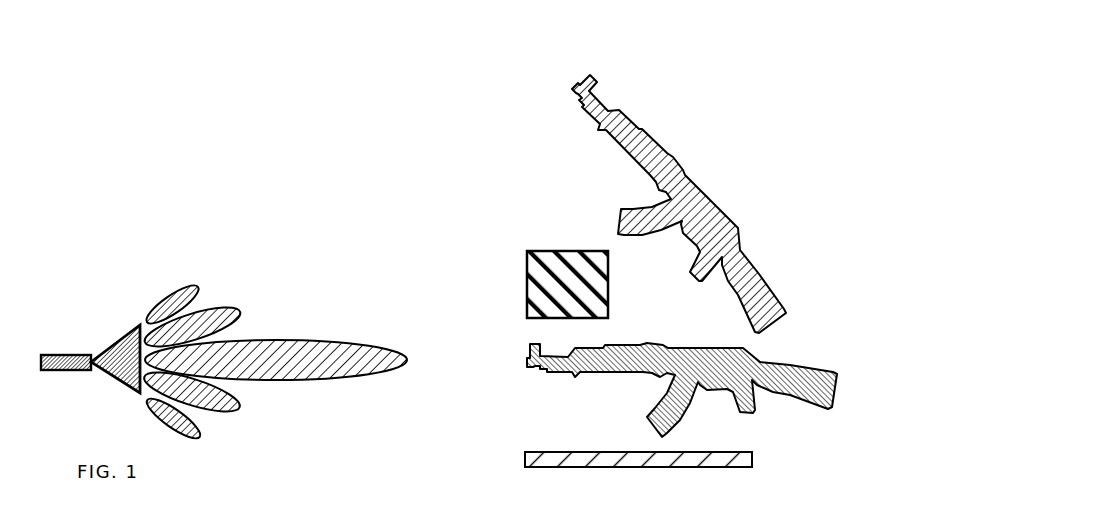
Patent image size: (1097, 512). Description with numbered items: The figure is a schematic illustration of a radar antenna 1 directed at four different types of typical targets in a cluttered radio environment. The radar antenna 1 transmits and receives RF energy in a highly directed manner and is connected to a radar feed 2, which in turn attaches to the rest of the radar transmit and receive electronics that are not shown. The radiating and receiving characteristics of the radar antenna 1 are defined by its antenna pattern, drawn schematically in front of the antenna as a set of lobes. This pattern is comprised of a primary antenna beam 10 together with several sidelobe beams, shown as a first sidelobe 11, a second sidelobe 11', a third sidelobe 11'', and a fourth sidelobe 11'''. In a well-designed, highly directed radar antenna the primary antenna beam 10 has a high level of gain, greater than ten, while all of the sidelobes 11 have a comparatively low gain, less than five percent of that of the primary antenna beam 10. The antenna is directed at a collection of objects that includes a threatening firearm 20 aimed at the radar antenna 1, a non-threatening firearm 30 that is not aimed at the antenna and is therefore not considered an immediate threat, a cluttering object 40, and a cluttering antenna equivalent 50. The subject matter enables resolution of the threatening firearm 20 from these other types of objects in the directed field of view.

The radar antenna 1 is at (122, 342).
The radar feed 2 is at (70, 357).
The primary antenna beam 10 is at (288, 342).
The first sidelobe 11 is at (195, 314).
The second sidelobe 11' is at (182, 288).
The third sidelobe 11'' is at (203, 405).
The fourth sidelobe 11''' is at (189, 429).
The threatening firearm 20 is at (533, 355).
The non-threatening firearm 30 is at (590, 110).
The cluttering object 40 is at (527, 278).
The cluttering antenna equivalent 50 is at (530, 462).